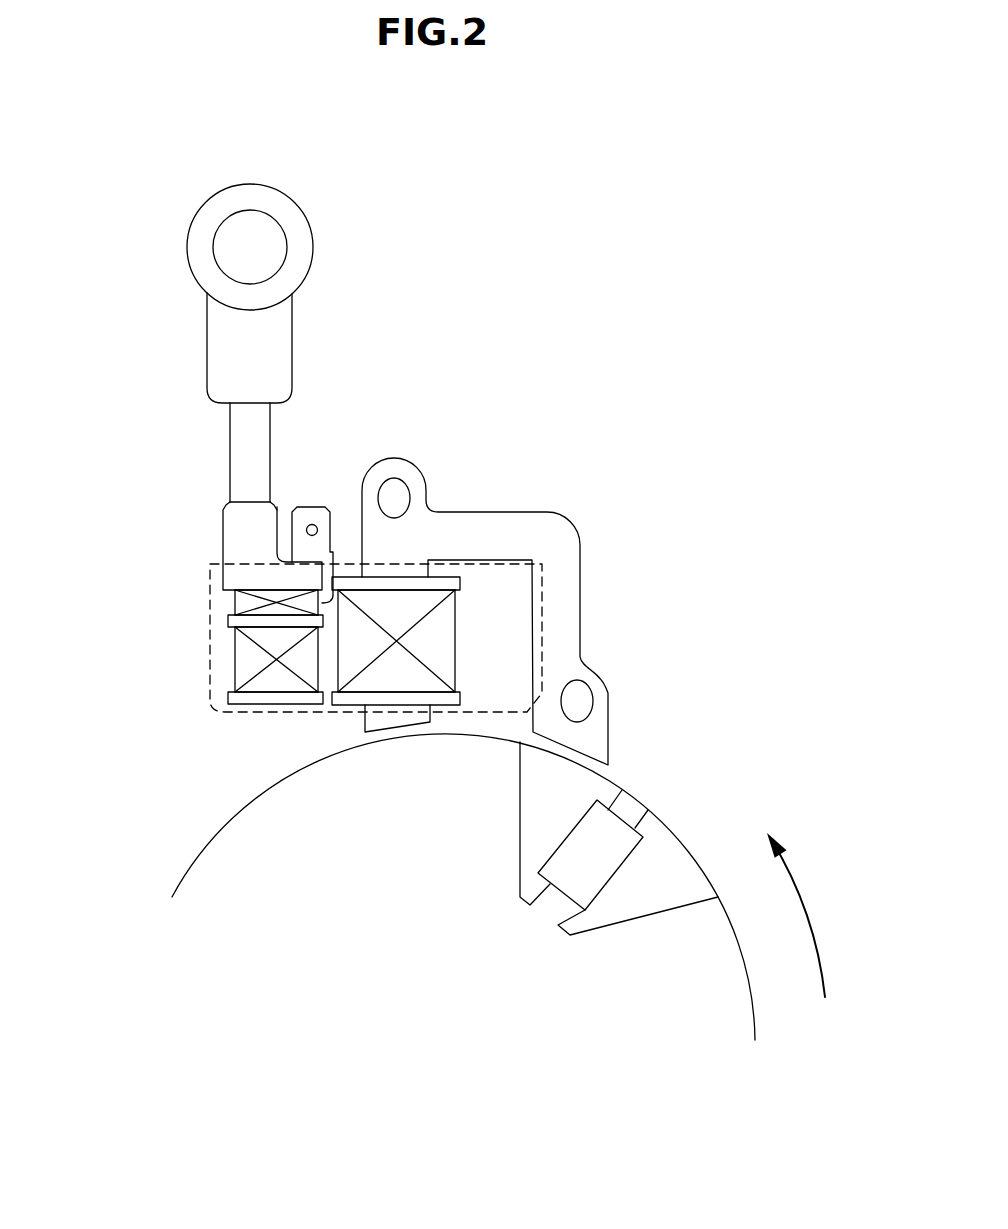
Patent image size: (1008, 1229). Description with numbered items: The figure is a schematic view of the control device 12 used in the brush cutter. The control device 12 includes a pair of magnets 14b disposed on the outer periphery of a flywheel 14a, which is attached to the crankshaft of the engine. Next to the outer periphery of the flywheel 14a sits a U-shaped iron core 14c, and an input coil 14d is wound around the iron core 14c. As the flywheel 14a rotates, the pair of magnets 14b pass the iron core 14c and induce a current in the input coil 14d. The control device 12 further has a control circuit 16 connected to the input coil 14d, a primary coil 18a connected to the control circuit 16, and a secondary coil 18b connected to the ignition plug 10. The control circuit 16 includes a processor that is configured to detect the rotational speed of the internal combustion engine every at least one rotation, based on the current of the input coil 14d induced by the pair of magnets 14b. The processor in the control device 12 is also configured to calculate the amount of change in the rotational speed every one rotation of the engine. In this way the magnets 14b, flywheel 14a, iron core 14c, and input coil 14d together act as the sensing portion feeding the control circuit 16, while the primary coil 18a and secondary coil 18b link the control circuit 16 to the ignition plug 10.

The ignition plug 10 is at (191, 273).
The control device 12 is at (536, 642).
The flywheel 14a is at (239, 808).
The magnets 14b is at (680, 833).
The U-shaped iron core 14c is at (583, 568).
The input coil 14d is at (457, 607).
The control circuit 16 is at (315, 617).
The primary coil 18a is at (233, 594).
The secondary coil 18b is at (235, 660).